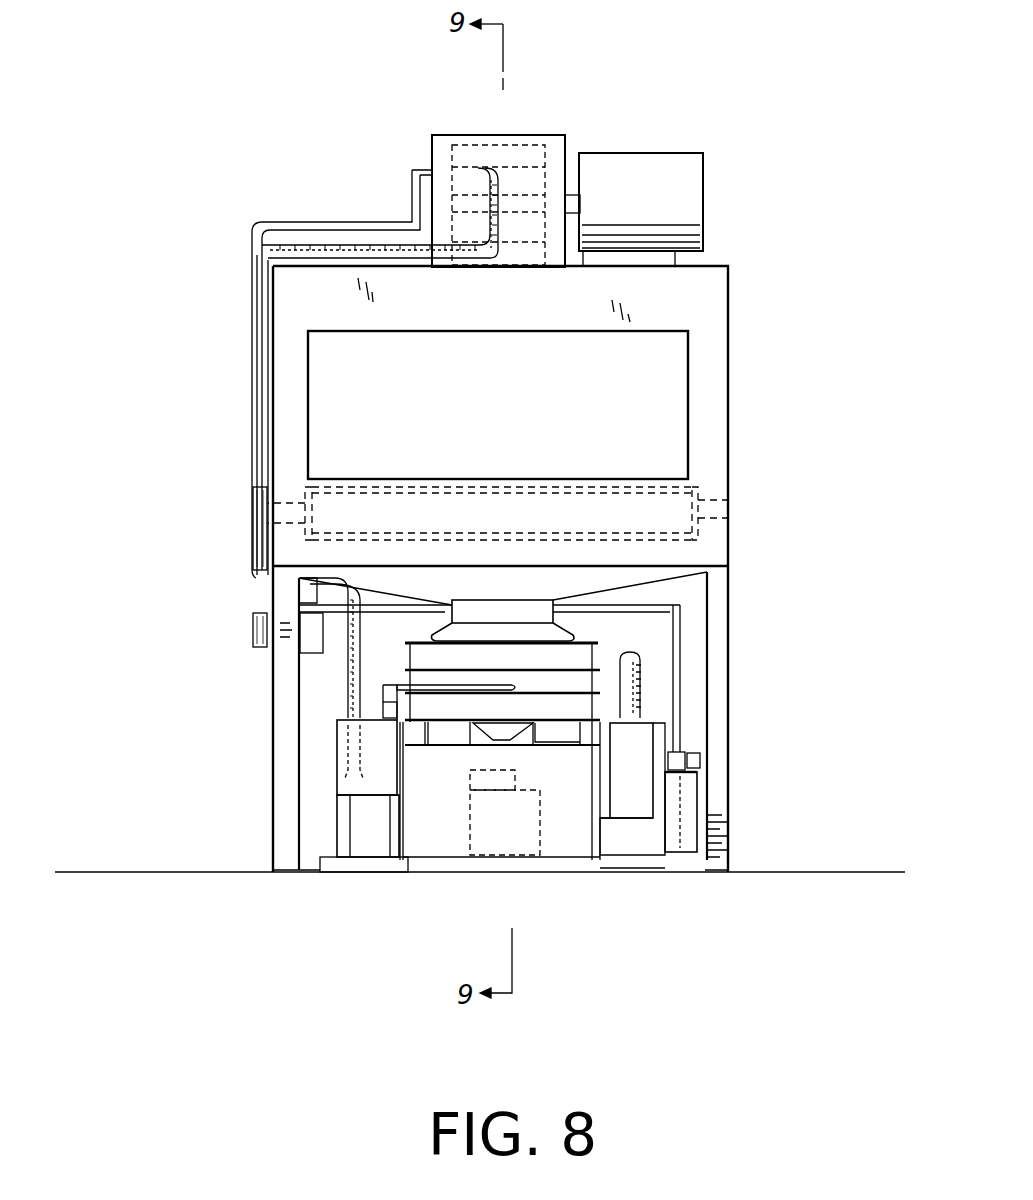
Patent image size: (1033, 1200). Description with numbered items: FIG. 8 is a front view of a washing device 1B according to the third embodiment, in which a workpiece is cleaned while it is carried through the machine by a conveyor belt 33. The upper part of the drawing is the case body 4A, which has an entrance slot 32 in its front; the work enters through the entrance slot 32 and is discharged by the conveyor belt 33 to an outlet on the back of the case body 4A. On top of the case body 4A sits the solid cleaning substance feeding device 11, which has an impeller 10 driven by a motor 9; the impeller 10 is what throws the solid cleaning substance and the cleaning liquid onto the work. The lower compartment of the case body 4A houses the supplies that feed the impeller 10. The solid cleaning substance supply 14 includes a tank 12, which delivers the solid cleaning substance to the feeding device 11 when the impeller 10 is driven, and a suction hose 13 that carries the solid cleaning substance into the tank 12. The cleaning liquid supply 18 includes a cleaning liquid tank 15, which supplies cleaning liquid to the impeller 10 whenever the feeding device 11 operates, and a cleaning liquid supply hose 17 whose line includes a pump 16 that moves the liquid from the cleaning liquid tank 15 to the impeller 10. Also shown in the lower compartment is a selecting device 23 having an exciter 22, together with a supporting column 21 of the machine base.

The washing device 1B is at (800, 142).
The case body 4A is at (731, 374).
The motor 9 is at (677, 167).
The impeller 10 is at (470, 150).
The solid cleaning substance feeding device 11 is at (597, 130).
The tank 12 is at (337, 800).
The suction hose 13 is at (363, 240).
The solid cleaning substance supply 14 is at (337, 728).
The cleaning liquid tank 15 is at (683, 845).
The pump 16 is at (683, 755).
The cleaning liquid supply hose 17 is at (312, 225).
The cleaning liquid supply 18 is at (705, 790).
The column 21 is at (627, 818).
The exciter 22 is at (478, 828).
The selecting device 23 is at (612, 642).
The entrance slot 32 is at (665, 443).
The conveyor belt 33 is at (462, 488).